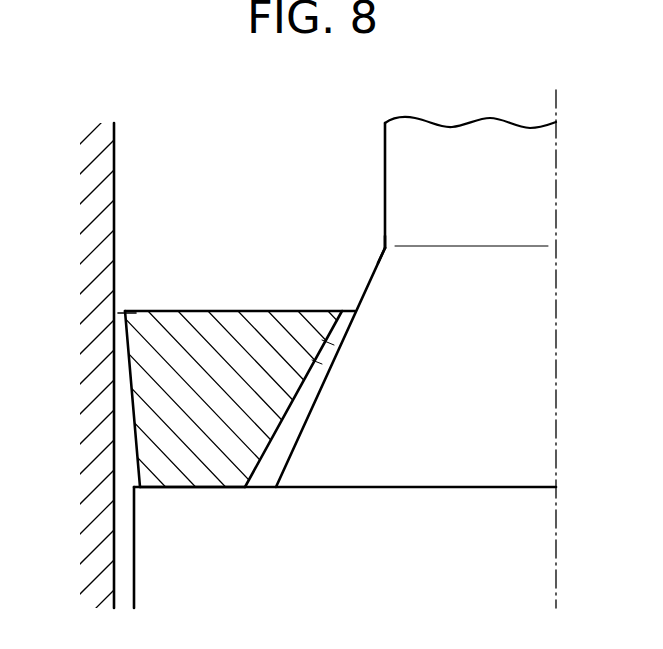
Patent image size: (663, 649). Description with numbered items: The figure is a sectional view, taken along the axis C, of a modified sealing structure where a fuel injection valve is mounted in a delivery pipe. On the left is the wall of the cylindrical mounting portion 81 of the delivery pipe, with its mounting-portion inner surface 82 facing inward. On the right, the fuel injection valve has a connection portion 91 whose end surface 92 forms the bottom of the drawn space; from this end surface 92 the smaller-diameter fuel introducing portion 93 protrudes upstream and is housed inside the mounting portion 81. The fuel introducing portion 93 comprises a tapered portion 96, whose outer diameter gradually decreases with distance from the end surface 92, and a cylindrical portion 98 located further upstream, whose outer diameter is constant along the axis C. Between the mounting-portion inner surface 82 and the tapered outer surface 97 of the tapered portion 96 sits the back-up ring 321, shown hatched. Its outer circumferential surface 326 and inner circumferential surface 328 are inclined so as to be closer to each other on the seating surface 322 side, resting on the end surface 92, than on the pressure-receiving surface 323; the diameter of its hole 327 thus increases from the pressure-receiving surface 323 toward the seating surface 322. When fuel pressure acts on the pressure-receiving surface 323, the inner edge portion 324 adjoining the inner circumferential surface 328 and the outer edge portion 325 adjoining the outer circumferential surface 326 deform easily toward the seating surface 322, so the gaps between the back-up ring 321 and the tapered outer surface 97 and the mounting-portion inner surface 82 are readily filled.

The mounting portion 81 is at (102, 157).
The mounting-portion inner surface 82 is at (115, 172).
The fuel introducing portion 93 is at (397, 177).
The back-up ring 321 is at (248, 381).
The seating surface 322 is at (190, 488).
The pressure-receiving surface 323 is at (217, 311).
The inner edge portion 324 is at (337, 312).
The outer edge portion 325 is at (128, 320).
The outer circumferential surface 326 is at (130, 404).
The hole 327 is at (346, 327).
The inner circumferential surface 328 is at (300, 395).
The tapered outer surface 97 is at (327, 350).
The end surface 92 is at (152, 486).
The cylindrical portion 98 is at (541, 191).
The tapered portion 96 is at (541, 386).
The connection portion 91 is at (541, 530).
The axis C is at (557, 97).